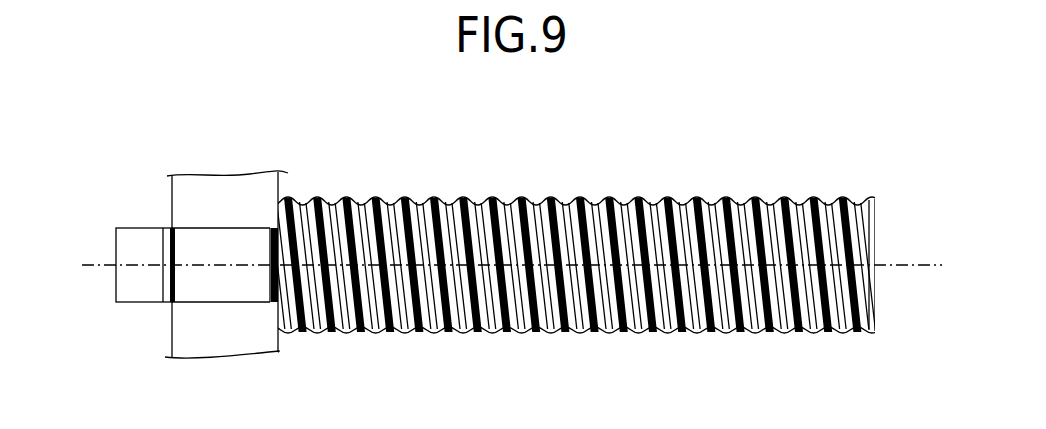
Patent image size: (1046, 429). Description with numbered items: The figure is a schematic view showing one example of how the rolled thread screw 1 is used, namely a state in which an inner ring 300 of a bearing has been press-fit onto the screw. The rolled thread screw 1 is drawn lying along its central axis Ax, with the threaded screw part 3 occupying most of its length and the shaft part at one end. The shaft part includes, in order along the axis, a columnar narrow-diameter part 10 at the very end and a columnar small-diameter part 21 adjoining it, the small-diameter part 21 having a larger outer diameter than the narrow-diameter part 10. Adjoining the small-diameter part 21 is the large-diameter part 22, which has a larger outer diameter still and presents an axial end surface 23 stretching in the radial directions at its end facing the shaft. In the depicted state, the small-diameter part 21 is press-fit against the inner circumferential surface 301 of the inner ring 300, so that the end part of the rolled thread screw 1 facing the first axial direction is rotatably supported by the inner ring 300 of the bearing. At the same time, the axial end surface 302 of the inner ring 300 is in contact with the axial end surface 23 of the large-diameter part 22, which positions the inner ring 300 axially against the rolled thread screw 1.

The rolled thread screw 1 is at (578, 231).
The screw part 3 is at (591, 203).
The narrow-diameter part 10 is at (138, 293).
The small-diameter part 21 is at (157, 316).
The large-diameter part 22 is at (273, 220).
The axial end surface 23 is at (245, 218).
The inner ring 300 is at (209, 269).
The inner circumferential surface 301 is at (206, 229).
The axial end surface 302 is at (280, 193).
The axis Ax is at (923, 265).